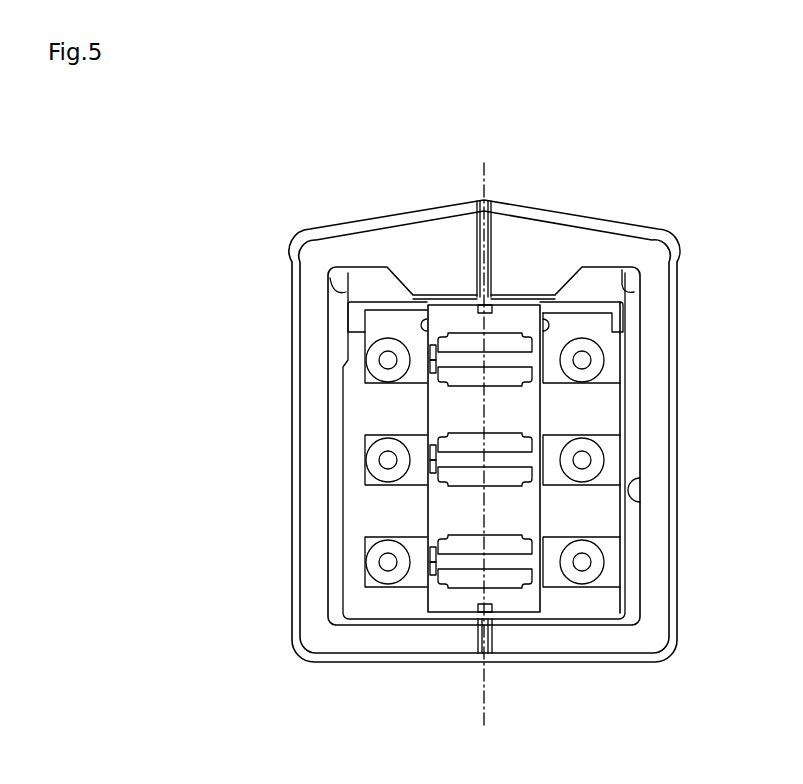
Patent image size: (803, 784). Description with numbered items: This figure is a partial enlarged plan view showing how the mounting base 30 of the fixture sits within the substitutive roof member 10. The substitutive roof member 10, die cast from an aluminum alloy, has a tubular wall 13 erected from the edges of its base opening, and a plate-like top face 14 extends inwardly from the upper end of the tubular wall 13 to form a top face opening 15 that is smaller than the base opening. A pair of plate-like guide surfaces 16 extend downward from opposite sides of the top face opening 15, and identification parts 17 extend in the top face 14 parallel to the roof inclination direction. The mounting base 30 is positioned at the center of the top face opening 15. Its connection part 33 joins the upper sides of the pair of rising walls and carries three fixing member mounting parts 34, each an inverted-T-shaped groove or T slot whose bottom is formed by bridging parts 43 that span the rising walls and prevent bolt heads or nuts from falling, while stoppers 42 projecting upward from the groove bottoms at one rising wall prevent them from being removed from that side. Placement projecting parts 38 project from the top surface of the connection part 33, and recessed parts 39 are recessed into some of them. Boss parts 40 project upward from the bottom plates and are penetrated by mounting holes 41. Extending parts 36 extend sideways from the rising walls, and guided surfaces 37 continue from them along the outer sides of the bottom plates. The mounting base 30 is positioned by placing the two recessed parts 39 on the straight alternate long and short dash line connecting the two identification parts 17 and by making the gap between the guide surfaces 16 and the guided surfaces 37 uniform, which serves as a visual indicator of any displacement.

The substitutive roof member 10 is at (295, 650).
The tubular wall 13 is at (673, 540).
The top face 14 is at (657, 513).
The top face opening 15 is at (636, 480).
The guide surfaces 16 is at (345, 292).
The identification parts 17 is at (480, 260).
The mounting base 30 is at (363, 626).
The connection part 33 is at (507, 427).
The fixing member mounting parts 34 is at (537, 460).
The extending parts 36 is at (388, 302).
The guided surfaces 37 is at (352, 312).
The placement projecting parts 38 is at (445, 410).
The recessed parts 39 is at (497, 310).
The boss parts 40 is at (377, 577).
The mounting holes 41 is at (387, 565).
The stoppers 42 is at (430, 360).
The bridging parts 43 is at (465, 362).